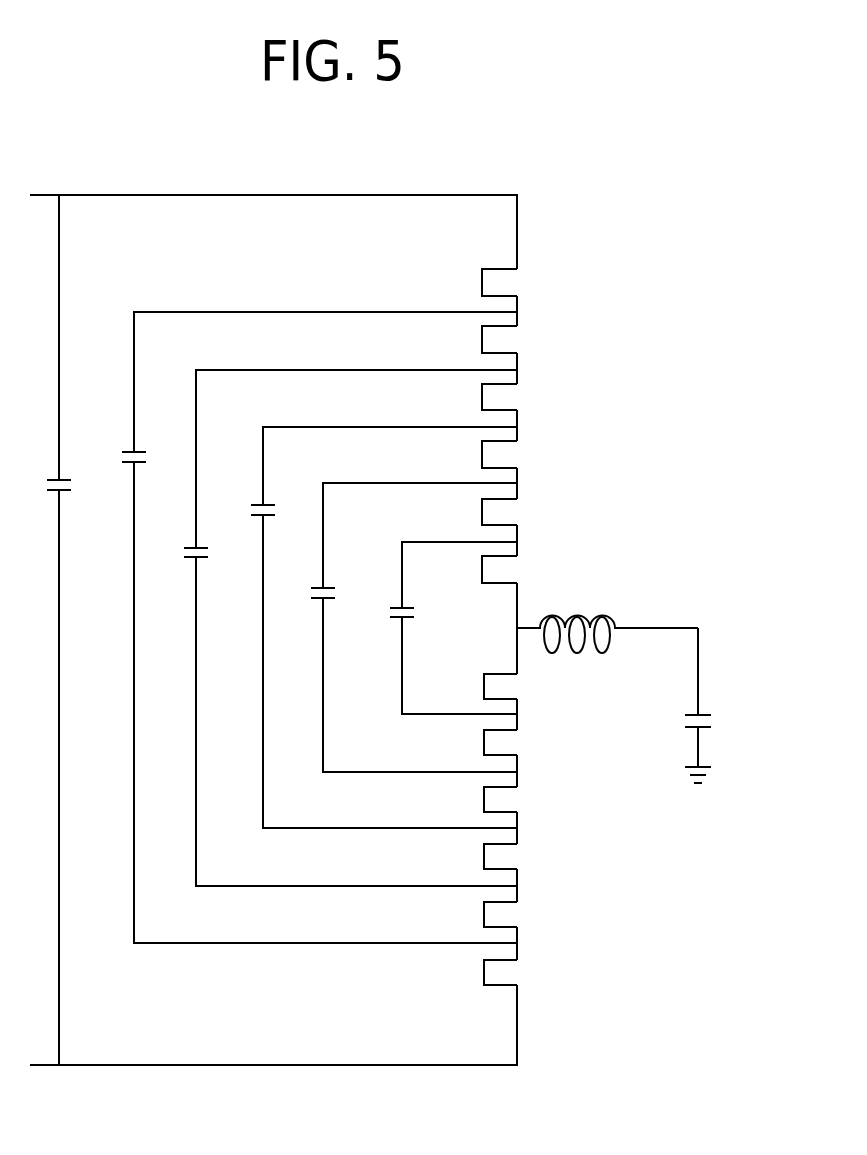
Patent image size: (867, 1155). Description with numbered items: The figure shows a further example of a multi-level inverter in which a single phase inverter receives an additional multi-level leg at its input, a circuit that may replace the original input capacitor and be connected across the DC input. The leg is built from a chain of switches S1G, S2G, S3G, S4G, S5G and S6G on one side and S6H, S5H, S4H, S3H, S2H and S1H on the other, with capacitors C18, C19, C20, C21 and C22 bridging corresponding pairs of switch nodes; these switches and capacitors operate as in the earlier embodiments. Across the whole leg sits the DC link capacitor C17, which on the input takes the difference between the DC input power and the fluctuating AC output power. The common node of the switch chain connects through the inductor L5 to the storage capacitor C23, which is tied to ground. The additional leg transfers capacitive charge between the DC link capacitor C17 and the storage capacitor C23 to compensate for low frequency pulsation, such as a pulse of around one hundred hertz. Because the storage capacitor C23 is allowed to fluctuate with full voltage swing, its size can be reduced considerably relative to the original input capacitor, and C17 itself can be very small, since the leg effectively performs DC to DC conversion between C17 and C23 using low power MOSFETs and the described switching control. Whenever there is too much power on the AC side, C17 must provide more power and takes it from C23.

The switch S1G is at (482, 282).
The switch S2G is at (482, 340).
The switch S3G is at (482, 397).
The switch S4G is at (482, 454).
The switch S5G is at (482, 512).
The switch S6G is at (482, 570).
The switch S1H is at (465, 972).
The switch S2H is at (465, 914).
The switch S3H is at (465, 856).
The switch S4H is at (465, 800).
The switch S5H is at (465, 742).
The switch S6H is at (465, 686).
The DC link capacitor C17 is at (89, 630).
The capacitor C18 is at (319, 627).
The capacitor C19 is at (350, 628).
The capacitor C20 is at (384, 627).
The capacitor C21 is at (414, 627).
The capacitor C22 is at (453, 628).
The storage capacitor C23 is at (728, 705).
The inductor L5 is at (607, 612).